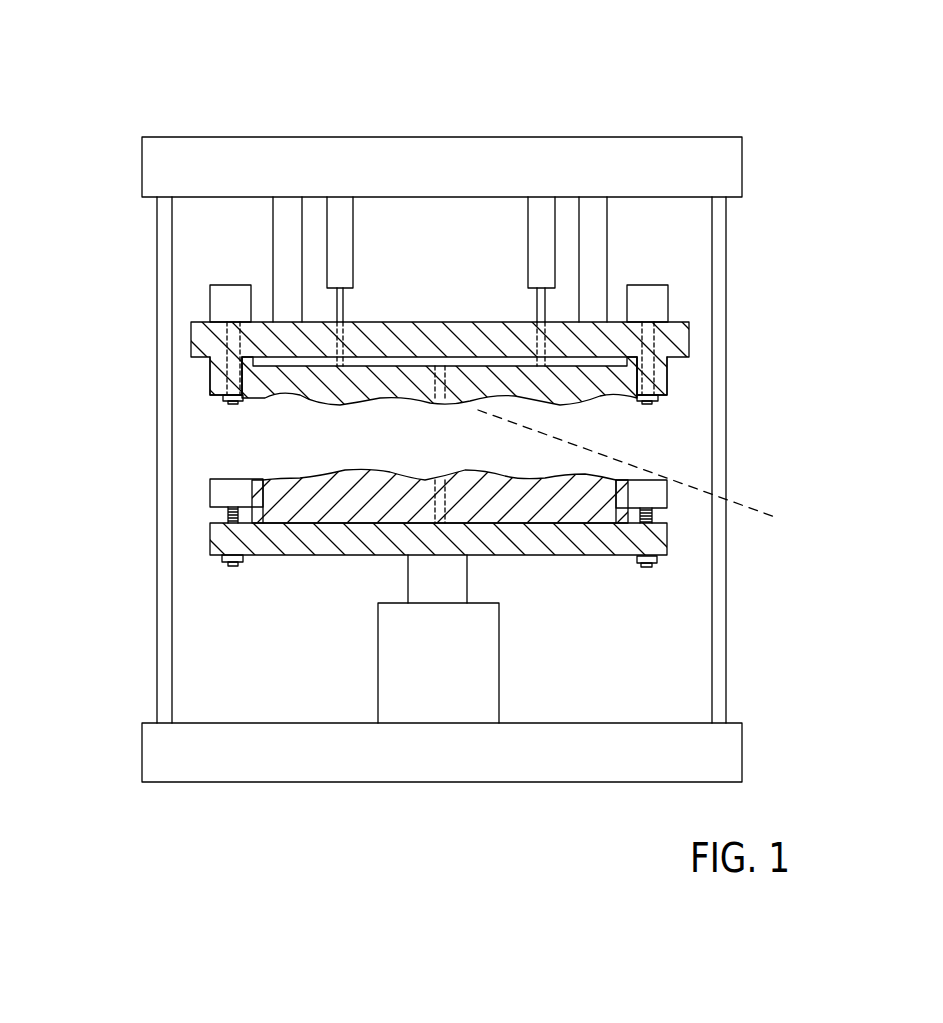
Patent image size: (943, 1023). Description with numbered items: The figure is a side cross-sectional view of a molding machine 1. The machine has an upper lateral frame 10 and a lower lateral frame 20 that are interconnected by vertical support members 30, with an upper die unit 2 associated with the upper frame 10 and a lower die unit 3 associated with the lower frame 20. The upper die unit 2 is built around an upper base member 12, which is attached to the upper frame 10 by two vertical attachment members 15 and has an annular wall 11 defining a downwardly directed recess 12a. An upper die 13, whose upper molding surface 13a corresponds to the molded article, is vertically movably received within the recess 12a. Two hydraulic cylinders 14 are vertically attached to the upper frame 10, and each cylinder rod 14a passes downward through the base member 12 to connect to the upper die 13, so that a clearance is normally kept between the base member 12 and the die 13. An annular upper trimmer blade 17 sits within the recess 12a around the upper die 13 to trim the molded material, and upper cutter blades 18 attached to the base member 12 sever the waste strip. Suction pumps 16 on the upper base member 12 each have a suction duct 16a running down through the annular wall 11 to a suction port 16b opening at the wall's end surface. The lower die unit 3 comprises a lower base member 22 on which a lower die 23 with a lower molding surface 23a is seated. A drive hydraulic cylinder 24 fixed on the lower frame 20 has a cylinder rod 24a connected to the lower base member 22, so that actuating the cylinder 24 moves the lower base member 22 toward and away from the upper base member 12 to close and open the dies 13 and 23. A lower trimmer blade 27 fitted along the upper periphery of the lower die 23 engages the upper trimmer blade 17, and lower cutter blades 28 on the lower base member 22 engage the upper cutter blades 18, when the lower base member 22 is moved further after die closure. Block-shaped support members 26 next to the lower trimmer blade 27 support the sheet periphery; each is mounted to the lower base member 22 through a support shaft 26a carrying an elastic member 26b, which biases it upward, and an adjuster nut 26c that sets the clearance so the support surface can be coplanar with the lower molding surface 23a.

The molding machine 1 is at (758, 110).
The upper die unit 2 is at (200, 270).
The lower die unit 3 is at (257, 597).
The upper lateral frame 10 is at (585, 160).
The annular wall 11 is at (665, 397).
The upper base member 12 is at (695, 340).
The recess 12a is at (233, 365).
The upper die 13 is at (593, 402).
The upper molding surface 13a is at (290, 405).
The hydraulic cylinder 14 is at (543, 243).
The cylinder rod 14a is at (535, 315).
The vertical attachment member 15 is at (595, 268).
The suction pump 16 is at (218, 297).
The suction duct 16a is at (662, 382).
The suction port 16b is at (648, 402).
The upper trimmer blade 17 is at (657, 401).
The upper cutter blade 18 is at (644, 473).
The lower lateral frame 20 is at (648, 762).
The lower base member 22 is at (230, 542).
The lower die 23 is at (447, 500).
The lower molding surface 23a is at (307, 478).
The drive hydraulic cylinder 24 is at (420, 700).
The cylinder rod 24a is at (412, 565).
The support member 26 is at (647, 493).
The support shaft 26a is at (233, 566).
The elastic member 26b is at (222, 515).
The adjuster nut 26c is at (215, 557).
The lower trimmer blade 27 is at (583, 516).
The lower cutter blade 28 is at (557, 556).
The vertical support member 30 is at (168, 300).